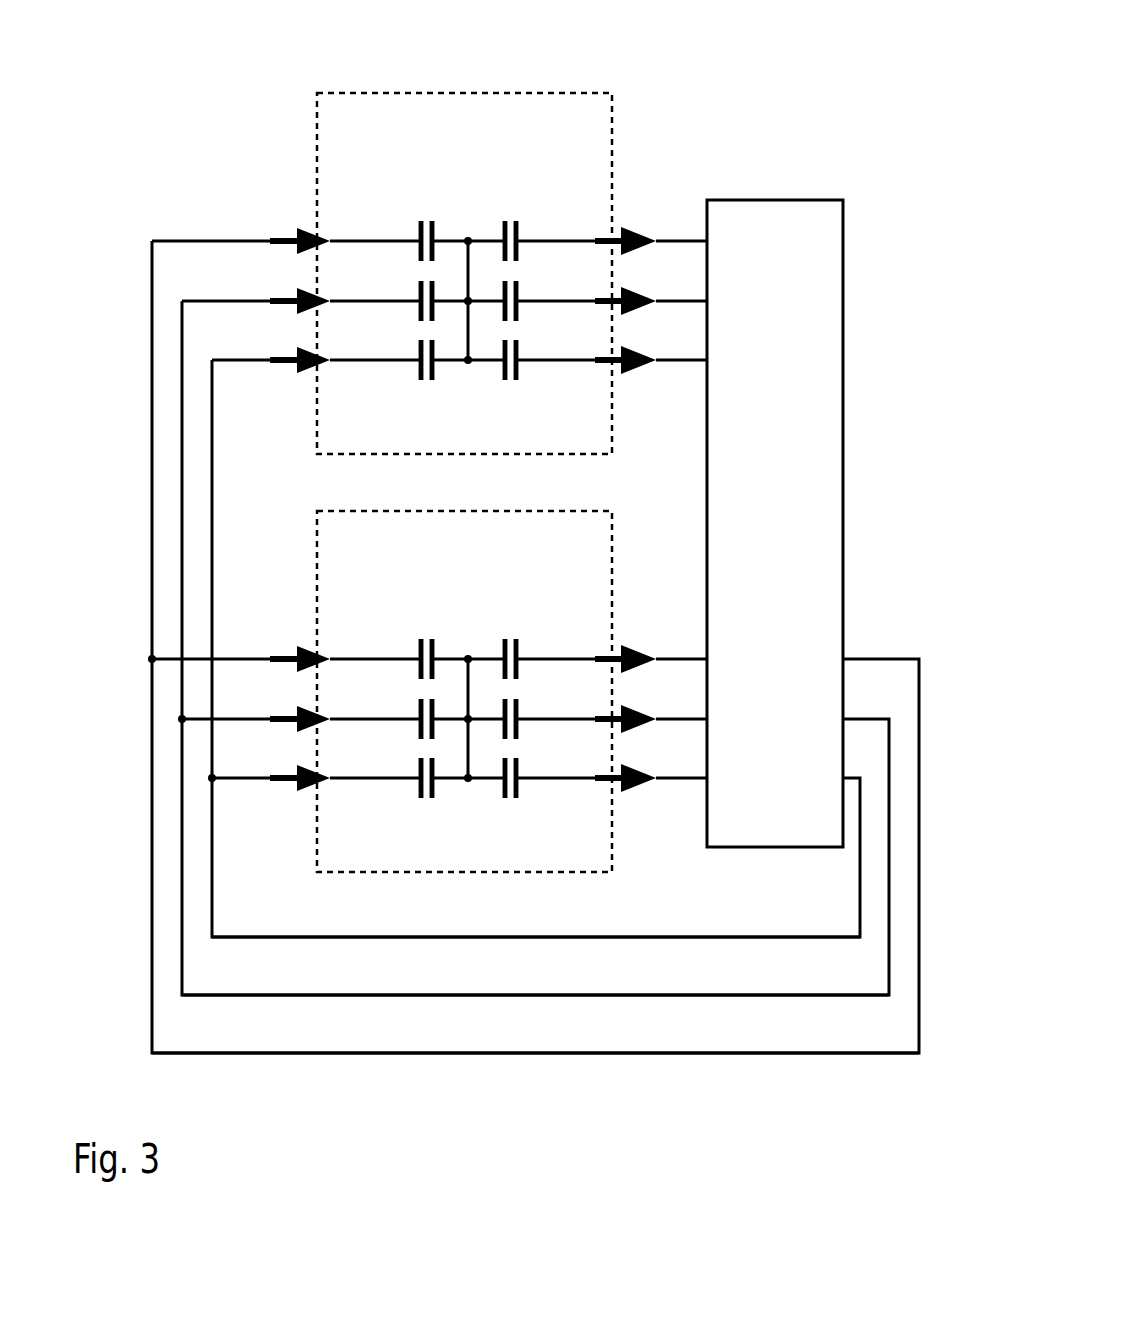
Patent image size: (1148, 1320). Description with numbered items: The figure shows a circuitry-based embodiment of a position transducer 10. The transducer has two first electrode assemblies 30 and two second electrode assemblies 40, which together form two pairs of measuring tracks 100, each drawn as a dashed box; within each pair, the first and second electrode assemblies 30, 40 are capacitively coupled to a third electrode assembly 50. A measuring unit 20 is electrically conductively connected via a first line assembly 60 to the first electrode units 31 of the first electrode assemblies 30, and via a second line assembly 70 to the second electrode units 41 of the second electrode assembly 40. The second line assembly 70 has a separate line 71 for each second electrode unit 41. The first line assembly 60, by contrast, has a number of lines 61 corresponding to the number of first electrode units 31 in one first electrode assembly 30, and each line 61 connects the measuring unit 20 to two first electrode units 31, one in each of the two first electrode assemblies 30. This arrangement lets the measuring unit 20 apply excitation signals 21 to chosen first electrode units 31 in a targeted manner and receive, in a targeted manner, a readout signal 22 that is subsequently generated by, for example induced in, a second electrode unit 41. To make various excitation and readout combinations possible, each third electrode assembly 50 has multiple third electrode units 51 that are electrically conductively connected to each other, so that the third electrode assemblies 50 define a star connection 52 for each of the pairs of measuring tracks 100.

The position transducer 10 is at (838, 140).
The measuring unit 20 is at (770, 200).
The excitation signal 21 is at (288, 240).
The readout signal 22 is at (606, 240).
The first electrode assembly 30 is at (419, 198).
The first electrode unit 31 is at (419, 237).
The second electrode assembly 40 is at (516, 198).
The second electrode unit 41 is at (519, 237).
The third electrode assembly 50 is at (503, 212).
The third electrode unit 51 is at (436, 252).
The star connection 52 is at (487, 454).
The first line assembly 60 is at (564, 1080).
The line 61 is at (398, 1056).
The second line assembly 70 is at (661, 207).
The separate line 71 is at (695, 362).
The pair of measuring tracks 100 is at (613, 122).